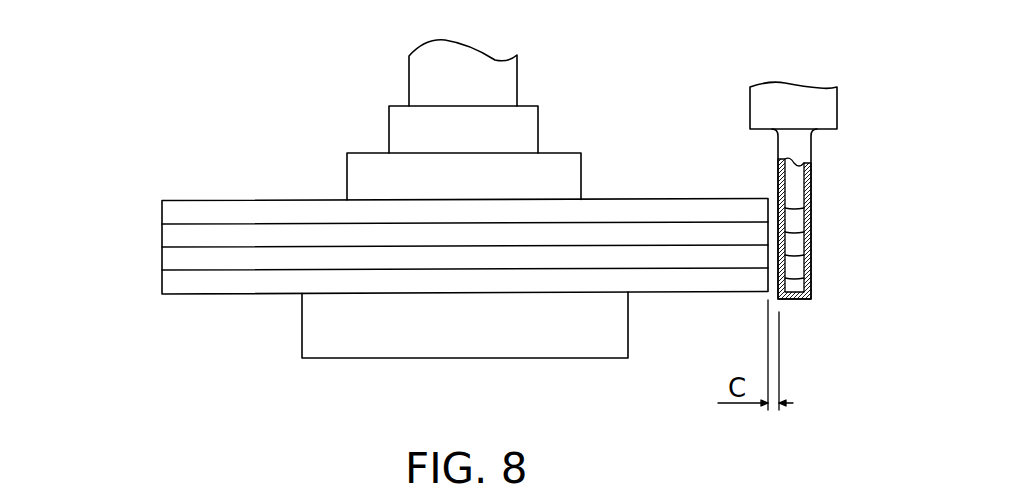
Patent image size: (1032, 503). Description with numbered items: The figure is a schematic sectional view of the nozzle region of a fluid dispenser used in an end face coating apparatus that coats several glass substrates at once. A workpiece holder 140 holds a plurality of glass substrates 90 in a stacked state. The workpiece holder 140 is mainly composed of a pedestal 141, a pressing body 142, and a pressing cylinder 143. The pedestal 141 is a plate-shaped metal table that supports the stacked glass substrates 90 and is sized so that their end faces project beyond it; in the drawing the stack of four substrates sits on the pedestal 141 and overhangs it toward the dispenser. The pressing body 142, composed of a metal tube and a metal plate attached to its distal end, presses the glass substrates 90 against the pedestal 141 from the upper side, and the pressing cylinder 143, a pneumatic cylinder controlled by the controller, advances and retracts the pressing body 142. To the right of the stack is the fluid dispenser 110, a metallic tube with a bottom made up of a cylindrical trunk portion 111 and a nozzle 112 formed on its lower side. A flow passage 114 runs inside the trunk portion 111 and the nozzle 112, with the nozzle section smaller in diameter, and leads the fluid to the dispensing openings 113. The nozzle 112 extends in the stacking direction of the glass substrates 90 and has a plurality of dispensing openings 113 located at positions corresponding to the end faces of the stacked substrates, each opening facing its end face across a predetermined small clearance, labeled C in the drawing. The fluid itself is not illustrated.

The glass substrate 90 is at (162, 237).
The fluid dispenser 110 is at (727, 81).
The trunk portion 111 is at (837, 105).
The nozzle 112 is at (812, 152).
The dispensing opening 113 is at (788, 209).
The flow passage 114 is at (803, 185).
The workpiece holder 140 is at (264, 111).
The pedestal 141 is at (302, 340).
The pressing body 142 is at (370, 152).
The pressing cylinder 143 is at (408, 72).